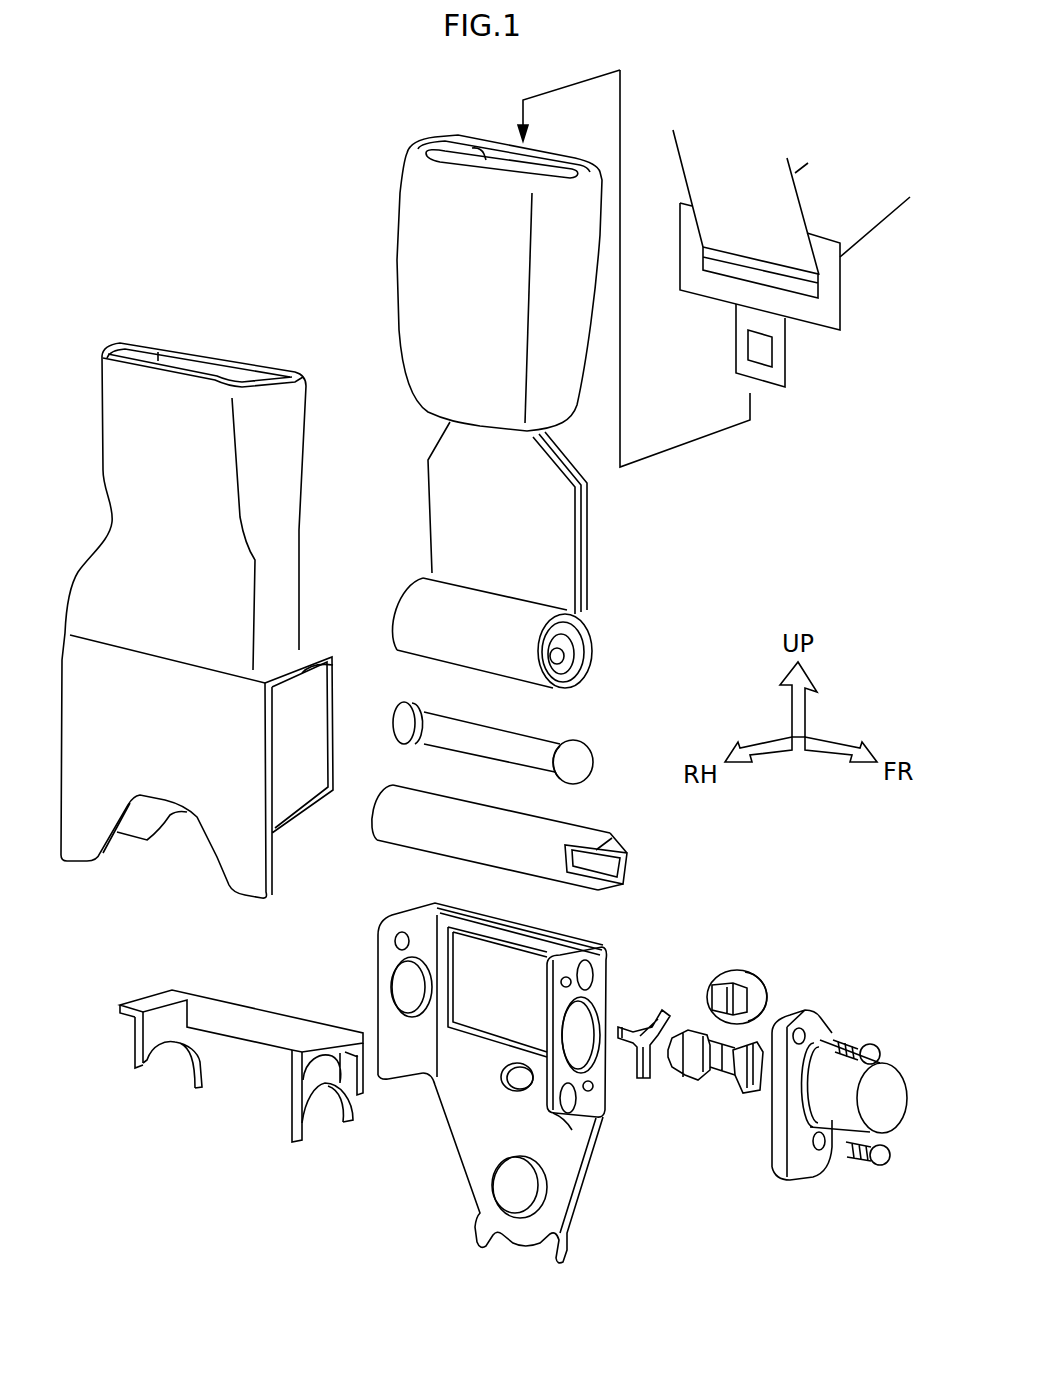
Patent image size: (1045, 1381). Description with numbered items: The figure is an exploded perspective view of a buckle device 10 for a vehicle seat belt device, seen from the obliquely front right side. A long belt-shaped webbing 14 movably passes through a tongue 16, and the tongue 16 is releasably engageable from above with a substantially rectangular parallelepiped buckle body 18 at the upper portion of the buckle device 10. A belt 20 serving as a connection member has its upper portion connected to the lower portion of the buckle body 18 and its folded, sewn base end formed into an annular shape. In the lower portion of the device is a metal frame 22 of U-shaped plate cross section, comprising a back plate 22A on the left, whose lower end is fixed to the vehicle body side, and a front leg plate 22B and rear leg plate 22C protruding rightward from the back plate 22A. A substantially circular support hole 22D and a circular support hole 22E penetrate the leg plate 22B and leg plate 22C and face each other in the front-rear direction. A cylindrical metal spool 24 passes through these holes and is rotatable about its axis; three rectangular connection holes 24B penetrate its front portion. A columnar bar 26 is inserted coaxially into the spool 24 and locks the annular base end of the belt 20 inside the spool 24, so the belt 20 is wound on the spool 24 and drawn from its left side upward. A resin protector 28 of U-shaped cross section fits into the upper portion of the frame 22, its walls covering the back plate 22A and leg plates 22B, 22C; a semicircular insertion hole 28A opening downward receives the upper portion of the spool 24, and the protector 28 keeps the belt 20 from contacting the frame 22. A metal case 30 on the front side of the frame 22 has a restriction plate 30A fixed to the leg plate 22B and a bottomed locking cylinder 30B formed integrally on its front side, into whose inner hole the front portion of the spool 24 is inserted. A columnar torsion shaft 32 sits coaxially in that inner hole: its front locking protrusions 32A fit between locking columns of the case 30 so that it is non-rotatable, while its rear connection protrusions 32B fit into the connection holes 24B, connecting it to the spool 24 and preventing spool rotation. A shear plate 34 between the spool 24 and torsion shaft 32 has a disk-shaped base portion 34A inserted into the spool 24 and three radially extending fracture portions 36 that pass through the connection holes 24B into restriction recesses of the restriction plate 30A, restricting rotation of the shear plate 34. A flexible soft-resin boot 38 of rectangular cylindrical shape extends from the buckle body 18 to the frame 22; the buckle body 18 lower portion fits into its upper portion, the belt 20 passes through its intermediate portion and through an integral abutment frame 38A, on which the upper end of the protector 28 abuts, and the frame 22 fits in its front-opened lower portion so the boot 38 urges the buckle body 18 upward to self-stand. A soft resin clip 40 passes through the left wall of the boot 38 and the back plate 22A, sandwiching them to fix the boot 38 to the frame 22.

The buckle device 10 is at (221, 210).
The webbing 14 is at (877, 233).
The tongue 16 is at (842, 313).
The buckle body 18 is at (405, 205).
The belt 20 is at (585, 542).
The frame 22 is at (504, 1058).
The back plate 22A is at (460, 1175).
The leg plate 22B is at (573, 1127).
The leg plate 22C is at (413, 905).
The support hole 22D is at (617, 1003).
The support hole 22E is at (405, 988).
The spool 24 is at (507, 818).
The connection hole 24B is at (648, 808).
The bar 26 is at (530, 733).
The protector 28 is at (237, 1063).
The insertion hole 28A is at (153, 1062).
The case 30 is at (859, 1097).
The restriction plate 30A is at (803, 1180).
The locking cylinder 30B is at (890, 1063).
The torsion shaft 32 is at (718, 1109).
The locking protrusion 32A is at (737, 1093).
The connection protrusion 32B is at (680, 1080).
The shear plate 34 is at (646, 1057).
The base portion 34A is at (628, 1058).
The fracture portion 36 is at (660, 1058).
The boot 38 is at (223, 620).
The abutment frame 38A is at (334, 670).
The clip 40 is at (745, 970).